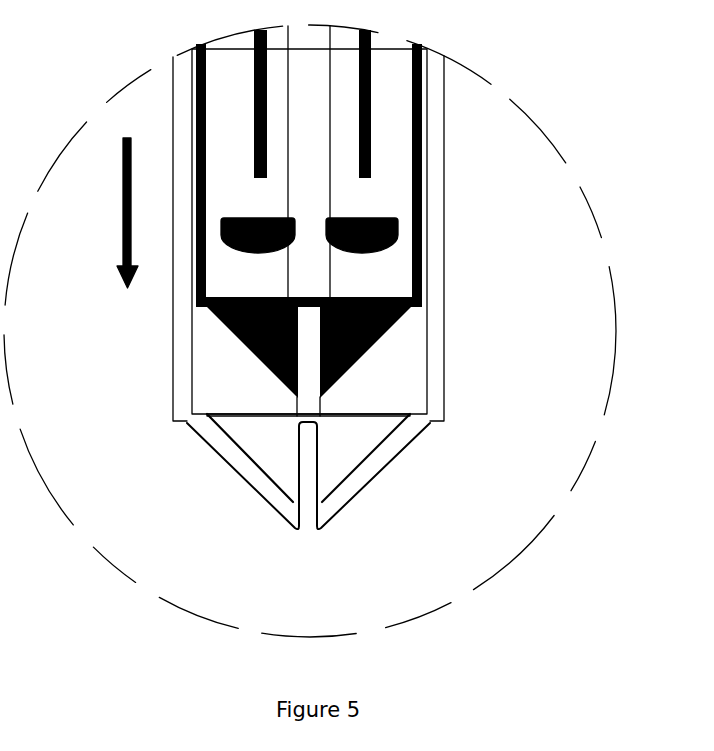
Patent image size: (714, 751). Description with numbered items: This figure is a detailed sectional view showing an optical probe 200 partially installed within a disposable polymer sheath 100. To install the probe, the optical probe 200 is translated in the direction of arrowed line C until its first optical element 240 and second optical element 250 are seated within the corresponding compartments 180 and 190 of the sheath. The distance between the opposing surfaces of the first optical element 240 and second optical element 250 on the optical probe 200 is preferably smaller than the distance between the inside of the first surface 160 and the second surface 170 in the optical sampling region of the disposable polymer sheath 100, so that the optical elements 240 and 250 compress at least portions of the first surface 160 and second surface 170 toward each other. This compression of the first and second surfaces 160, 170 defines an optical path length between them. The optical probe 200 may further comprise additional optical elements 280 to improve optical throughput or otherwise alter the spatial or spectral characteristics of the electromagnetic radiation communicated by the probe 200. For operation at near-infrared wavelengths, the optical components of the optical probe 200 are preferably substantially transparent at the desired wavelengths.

The arrowed line C is at (123, 244).
The disposable polymer sheath 100 is at (173, 350).
The first surface 160 is at (340, 468).
The second surface 170 is at (278, 468).
The compartment 180 is at (278, 439).
The compartment 190 is at (343, 443).
The optical probe 200 is at (423, 208).
The first optical element 240 is at (240, 343).
The second optical element 250 is at (380, 340).
The additional optical elements 280 is at (378, 243).